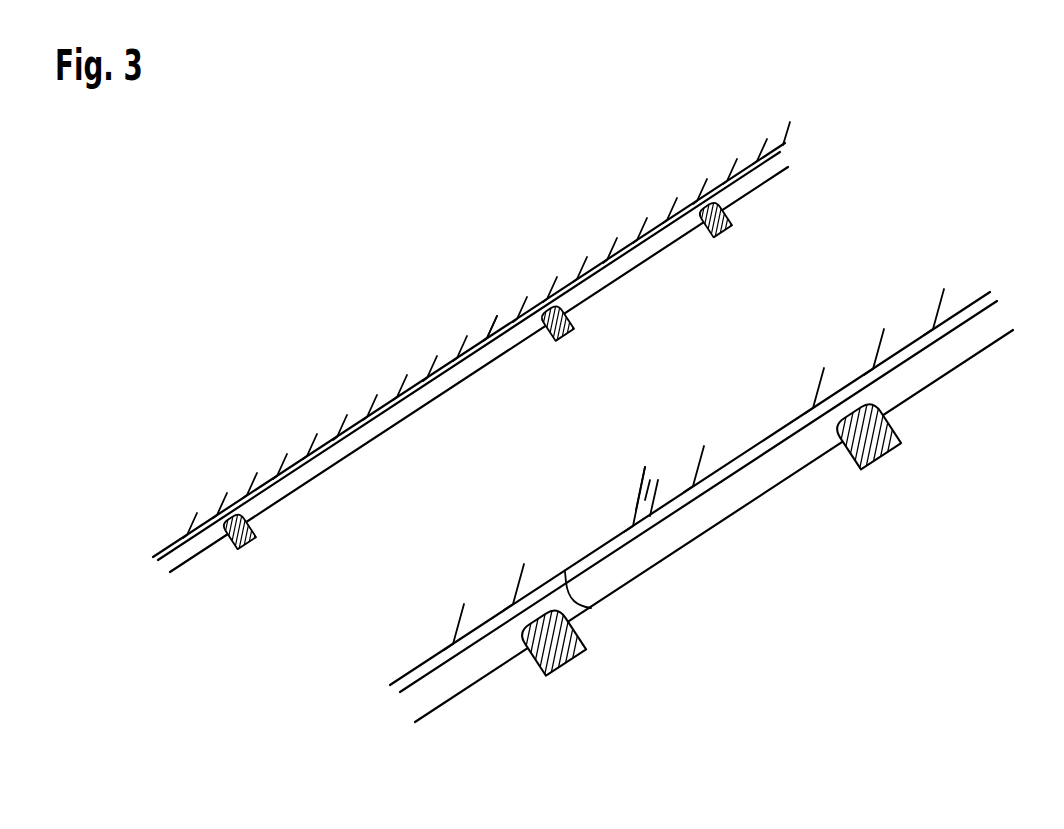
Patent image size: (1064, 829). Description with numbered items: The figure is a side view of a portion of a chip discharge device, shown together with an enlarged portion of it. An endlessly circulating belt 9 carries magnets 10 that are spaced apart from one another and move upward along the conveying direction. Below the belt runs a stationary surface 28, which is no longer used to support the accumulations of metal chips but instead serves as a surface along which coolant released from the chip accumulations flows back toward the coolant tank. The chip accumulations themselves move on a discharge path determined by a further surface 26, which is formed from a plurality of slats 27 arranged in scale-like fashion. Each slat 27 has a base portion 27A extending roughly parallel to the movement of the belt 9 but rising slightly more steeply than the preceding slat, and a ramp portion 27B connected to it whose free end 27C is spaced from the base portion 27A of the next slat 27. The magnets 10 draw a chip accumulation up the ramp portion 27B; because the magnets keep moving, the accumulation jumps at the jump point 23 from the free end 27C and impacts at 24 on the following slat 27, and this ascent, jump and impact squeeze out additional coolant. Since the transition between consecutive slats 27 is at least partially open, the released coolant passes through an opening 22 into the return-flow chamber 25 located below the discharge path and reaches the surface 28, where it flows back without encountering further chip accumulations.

The belt 9 is at (735, 203).
The magnets 10 is at (713, 234).
The opening 22 is at (590, 610).
The jump point 23 is at (650, 474).
The impact point 24 is at (657, 500).
The return-flow chamber 25 is at (735, 459).
The surface 26 is at (681, 169).
The slats 27 is at (409, 359).
The base portion 27A is at (470, 326).
The ramp portion 27B is at (574, 263).
The free end 27C is at (638, 467).
The stationary surface 28 is at (767, 162).